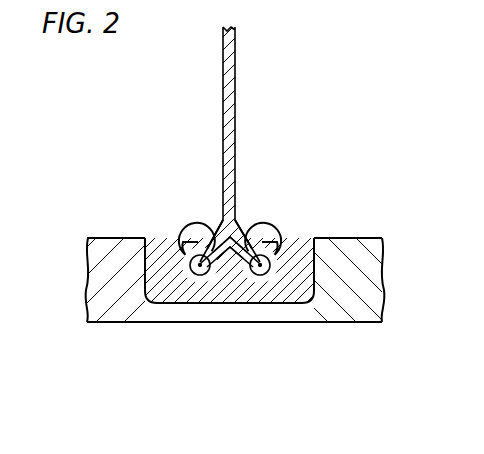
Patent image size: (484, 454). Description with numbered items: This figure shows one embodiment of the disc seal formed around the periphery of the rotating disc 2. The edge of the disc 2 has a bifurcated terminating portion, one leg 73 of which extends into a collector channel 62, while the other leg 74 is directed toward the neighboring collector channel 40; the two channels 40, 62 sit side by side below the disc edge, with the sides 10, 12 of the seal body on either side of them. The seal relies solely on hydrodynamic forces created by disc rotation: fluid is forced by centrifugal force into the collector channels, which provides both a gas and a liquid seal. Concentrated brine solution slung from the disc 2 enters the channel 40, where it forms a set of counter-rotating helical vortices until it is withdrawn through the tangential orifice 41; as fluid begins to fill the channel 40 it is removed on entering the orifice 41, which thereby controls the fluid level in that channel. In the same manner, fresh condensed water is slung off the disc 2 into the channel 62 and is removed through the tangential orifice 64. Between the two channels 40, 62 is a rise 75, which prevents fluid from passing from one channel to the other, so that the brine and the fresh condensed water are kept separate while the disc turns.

The disc 2 is at (237, 117).
The first housing side 10 is at (208, 76).
The second housing side 12 is at (269, 76).
The disc seal collector channel 40 is at (190, 281).
The tangential orifice 41 is at (178, 248).
The disc seal collector channel 62 is at (268, 281).
The tangential orifice 64 is at (276, 246).
The leg 73 is at (245, 241).
The left prong edge of blade tip 74 is at (211, 248).
The rise 75 is at (232, 259).